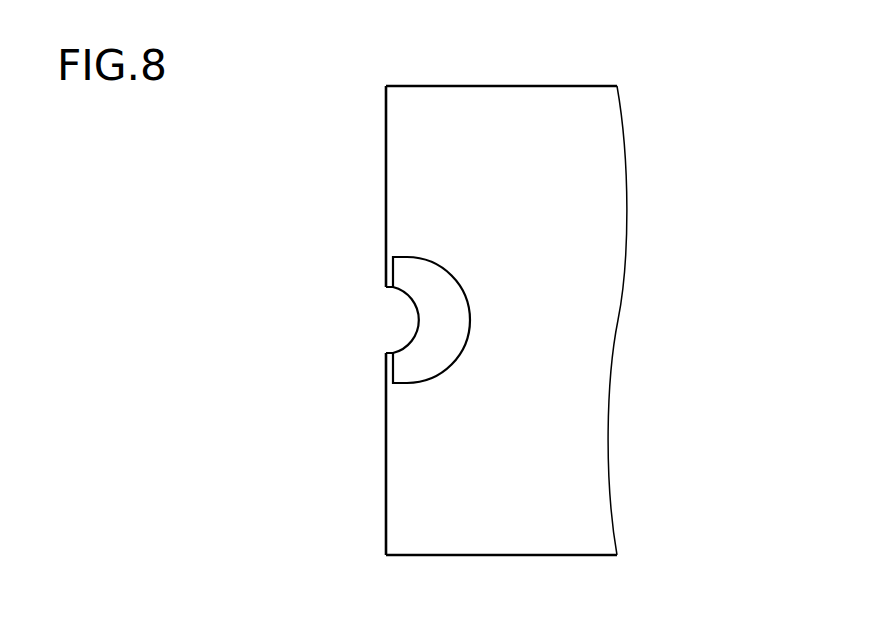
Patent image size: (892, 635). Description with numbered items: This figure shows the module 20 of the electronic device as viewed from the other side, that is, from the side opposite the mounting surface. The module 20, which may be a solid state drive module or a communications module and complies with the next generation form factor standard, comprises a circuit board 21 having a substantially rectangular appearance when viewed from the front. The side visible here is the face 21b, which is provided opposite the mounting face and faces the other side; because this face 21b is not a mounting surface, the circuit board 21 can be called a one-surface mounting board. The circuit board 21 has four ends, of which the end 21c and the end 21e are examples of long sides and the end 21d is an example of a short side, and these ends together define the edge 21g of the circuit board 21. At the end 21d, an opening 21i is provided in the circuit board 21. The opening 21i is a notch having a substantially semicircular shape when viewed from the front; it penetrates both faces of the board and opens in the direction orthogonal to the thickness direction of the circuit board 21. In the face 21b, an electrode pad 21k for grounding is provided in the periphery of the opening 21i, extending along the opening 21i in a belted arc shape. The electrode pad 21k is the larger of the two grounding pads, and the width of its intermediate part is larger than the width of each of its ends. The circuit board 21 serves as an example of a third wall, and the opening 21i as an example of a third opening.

The module 20 is at (692, 104).
The circuit board 21 is at (457, 327).
The face 21b is at (457, 327).
The end 21c is at (431, 556).
The end 21d is at (386, 521).
The end 21e is at (523, 86).
The edge 21g is at (386, 161).
The opening 21i is at (398, 323).
The electrode pad 21k is at (398, 372).